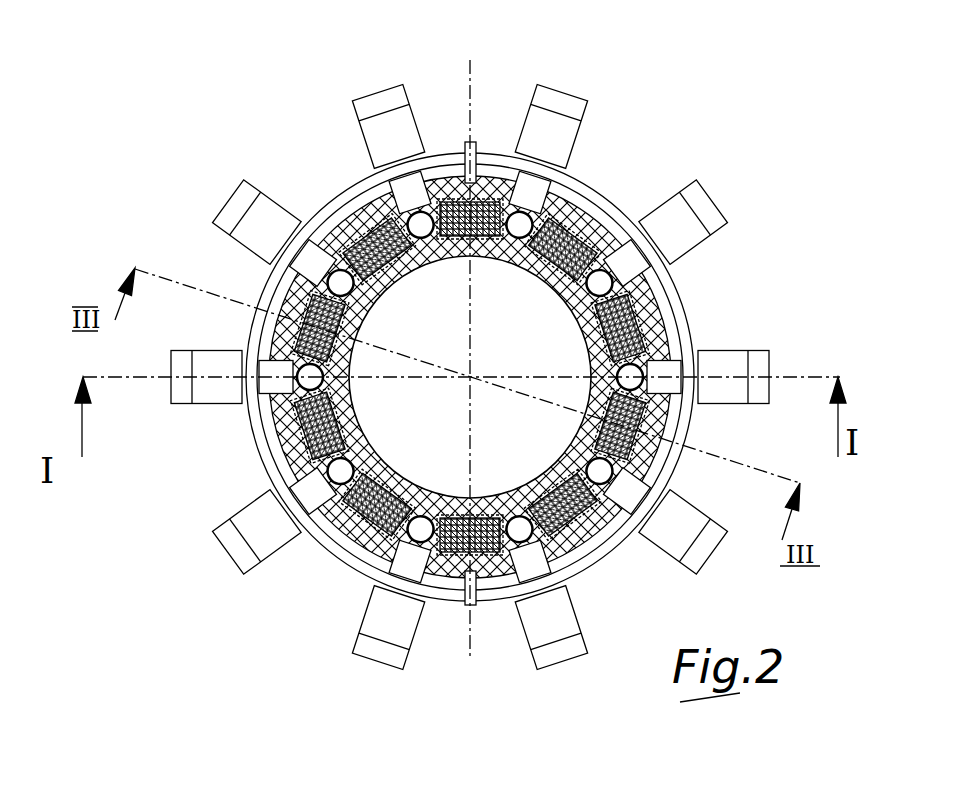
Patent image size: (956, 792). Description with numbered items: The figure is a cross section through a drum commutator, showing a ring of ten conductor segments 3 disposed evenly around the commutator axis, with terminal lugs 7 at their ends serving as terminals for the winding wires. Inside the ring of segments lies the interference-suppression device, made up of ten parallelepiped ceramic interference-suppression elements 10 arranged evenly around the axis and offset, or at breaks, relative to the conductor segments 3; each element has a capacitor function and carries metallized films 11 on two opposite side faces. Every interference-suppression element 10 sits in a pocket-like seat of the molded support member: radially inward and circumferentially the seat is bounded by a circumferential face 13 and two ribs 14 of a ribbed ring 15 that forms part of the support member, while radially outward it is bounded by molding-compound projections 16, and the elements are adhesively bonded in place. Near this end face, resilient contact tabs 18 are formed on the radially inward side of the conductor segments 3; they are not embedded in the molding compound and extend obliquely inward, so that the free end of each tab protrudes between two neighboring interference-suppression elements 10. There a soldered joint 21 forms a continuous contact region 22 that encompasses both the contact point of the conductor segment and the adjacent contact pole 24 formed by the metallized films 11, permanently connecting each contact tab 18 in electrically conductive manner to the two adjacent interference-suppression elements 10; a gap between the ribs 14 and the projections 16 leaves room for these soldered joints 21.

The conductor segments 3 is at (664, 283).
The terminal lugs 7 is at (716, 226).
The interference-suppression elements 10 is at (614, 207).
The metallized films 11 is at (336, 207).
The circumferential face 13 is at (480, 148).
The ribs 14 is at (280, 435).
The ribbed ring 15 is at (347, 530).
The molding-compound projections 16 is at (449, 578).
The resilient contact tabs 18 is at (307, 257).
The soldered joint 21 is at (437, 178).
The continuous contact region 22 is at (558, 188).
The contact pole 24 is at (360, 222).